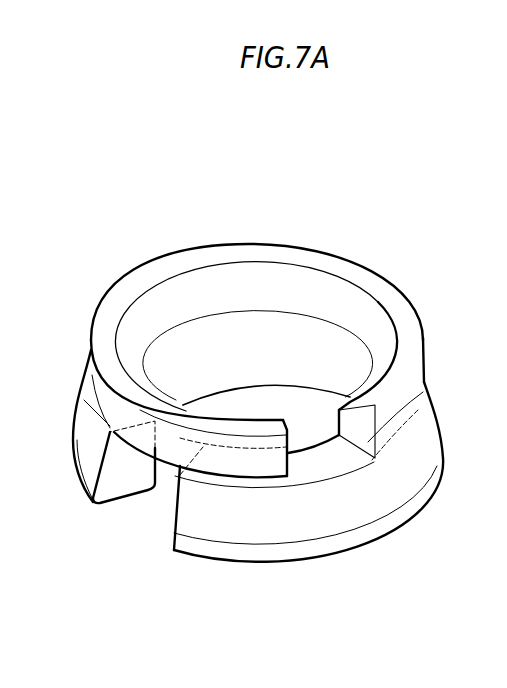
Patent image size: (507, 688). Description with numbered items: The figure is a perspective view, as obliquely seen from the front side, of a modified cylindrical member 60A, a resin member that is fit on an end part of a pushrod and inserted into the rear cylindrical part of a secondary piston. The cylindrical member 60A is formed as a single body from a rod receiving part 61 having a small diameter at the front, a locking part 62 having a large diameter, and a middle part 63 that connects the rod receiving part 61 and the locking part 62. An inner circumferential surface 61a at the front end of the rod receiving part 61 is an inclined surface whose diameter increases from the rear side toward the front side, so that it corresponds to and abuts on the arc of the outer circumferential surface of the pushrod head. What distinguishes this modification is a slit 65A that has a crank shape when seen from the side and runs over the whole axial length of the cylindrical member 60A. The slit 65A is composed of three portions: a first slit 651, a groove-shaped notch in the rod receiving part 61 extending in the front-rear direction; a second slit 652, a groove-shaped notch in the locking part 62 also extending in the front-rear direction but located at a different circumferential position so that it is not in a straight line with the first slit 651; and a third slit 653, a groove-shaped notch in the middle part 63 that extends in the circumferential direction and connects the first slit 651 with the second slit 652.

The cylindrical member 60A is at (182, 240).
The rod receiving part 61 is at (410, 392).
The inner circumferential surface 61a is at (265, 285).
The first slit 651 is at (312, 425).
The middle part 63 is at (423, 435).
The locking part 62 is at (420, 500).
The slit 65A is at (338, 485).
The third slit 653 is at (237, 487).
The second slit 652 is at (143, 517).